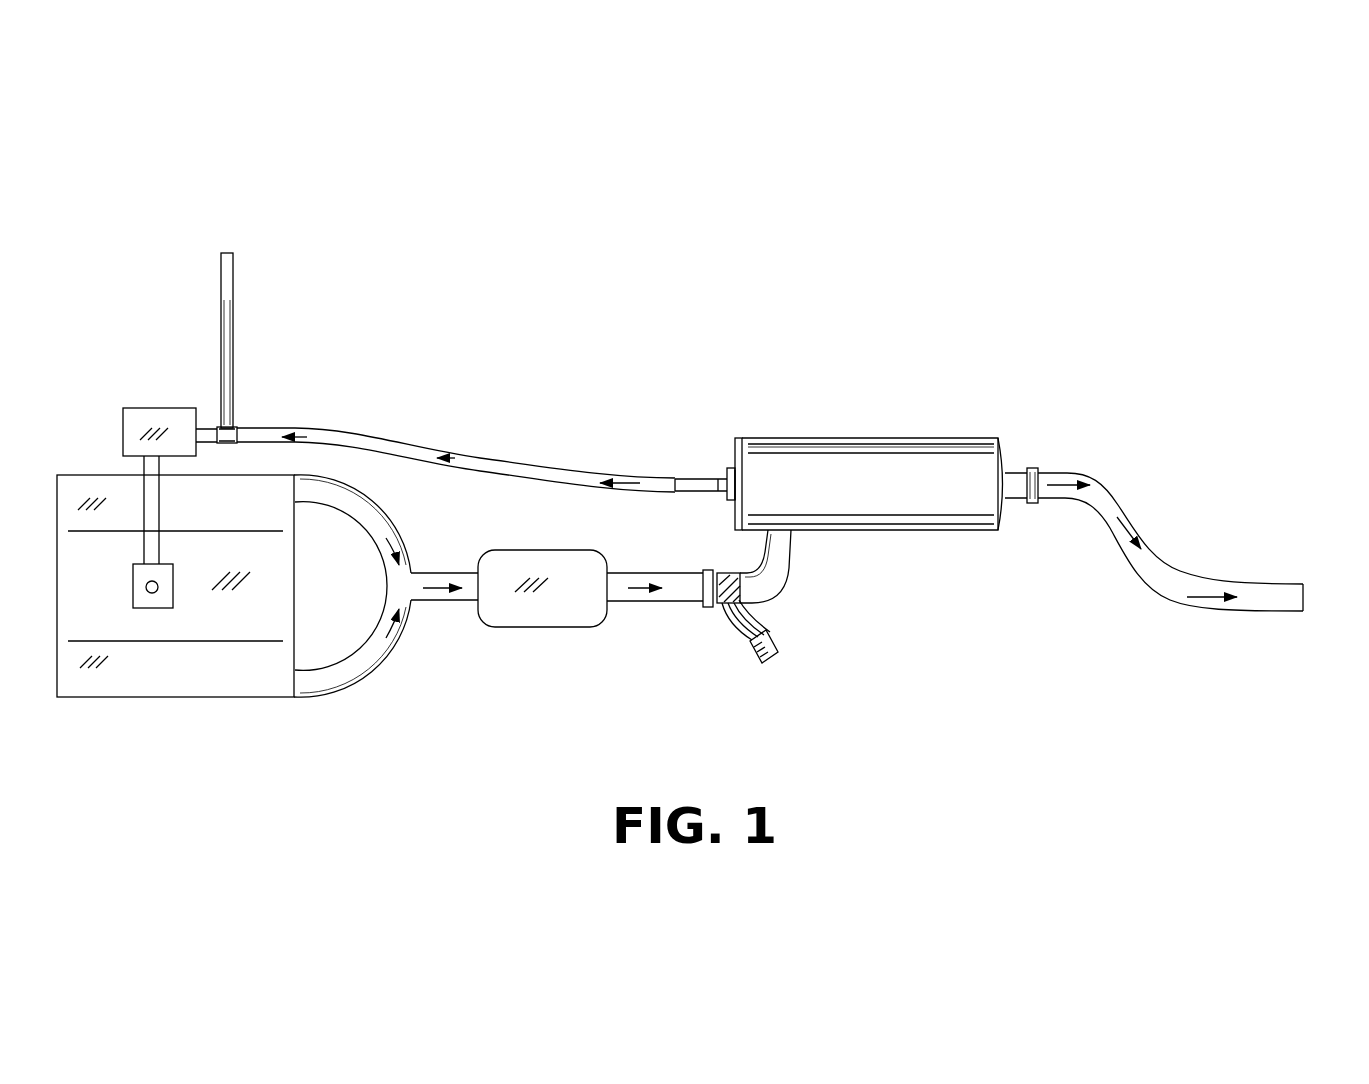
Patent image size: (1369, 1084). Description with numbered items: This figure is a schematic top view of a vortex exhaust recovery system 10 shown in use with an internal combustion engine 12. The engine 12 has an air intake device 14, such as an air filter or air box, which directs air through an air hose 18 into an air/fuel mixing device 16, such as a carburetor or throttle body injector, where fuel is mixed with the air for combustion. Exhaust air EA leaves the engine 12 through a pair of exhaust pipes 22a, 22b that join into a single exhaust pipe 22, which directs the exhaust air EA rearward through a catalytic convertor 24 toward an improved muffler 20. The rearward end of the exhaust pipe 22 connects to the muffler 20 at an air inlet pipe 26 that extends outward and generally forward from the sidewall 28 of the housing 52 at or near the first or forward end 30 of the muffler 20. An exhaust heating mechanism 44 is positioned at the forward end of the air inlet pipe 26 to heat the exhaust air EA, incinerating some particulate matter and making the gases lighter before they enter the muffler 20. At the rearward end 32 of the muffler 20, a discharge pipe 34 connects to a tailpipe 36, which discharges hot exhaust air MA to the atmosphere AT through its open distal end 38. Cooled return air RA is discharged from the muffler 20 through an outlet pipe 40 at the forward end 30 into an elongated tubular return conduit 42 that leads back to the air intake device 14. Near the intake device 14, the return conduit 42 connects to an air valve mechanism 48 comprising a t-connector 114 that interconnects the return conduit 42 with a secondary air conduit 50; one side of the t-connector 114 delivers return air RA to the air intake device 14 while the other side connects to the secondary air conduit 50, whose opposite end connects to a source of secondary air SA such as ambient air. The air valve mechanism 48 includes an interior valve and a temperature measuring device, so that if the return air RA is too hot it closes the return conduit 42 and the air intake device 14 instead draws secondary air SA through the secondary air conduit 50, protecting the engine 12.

The vortex exhaust recovery system 10 is at (1048, 336).
The internal combustion engine 12 is at (97, 667).
The air intake device 14 is at (143, 415).
The air/fuel mixing device 16 is at (158, 602).
The air hose 18 is at (152, 502).
The muffler 20 is at (950, 434).
The exhaust pipe 22 is at (441, 578).
The exhaust pipe 22a is at (335, 678).
The exhaust pipe 22b is at (368, 518).
The catalytic convertor 24 is at (558, 610).
The air inlet pipe 26 is at (780, 552).
The sidewall 28 is at (901, 502).
The first or forward end 30 is at (741, 432).
The rearward end 32 is at (997, 546).
The discharge pipe 34 is at (1018, 476).
The tailpipe 36 is at (1113, 505).
The open distal end 38 is at (1300, 580).
The outlet pipe 40 is at (695, 484).
The return conduit 42 is at (355, 436).
The exhaust heating mechanism 44 is at (782, 623).
The air valve mechanism 48 is at (243, 428).
The secondary air conduit 50 is at (228, 297).
The housing 52 is at (853, 466).
The t-connector 114 is at (218, 428).
The secondary air SA is at (242, 221).
The return air RA is at (448, 458).
The exhaust air EA is at (392, 627).
The hot exhaust air MA is at (1210, 594).
The atmosphere AT is at (1343, 632).